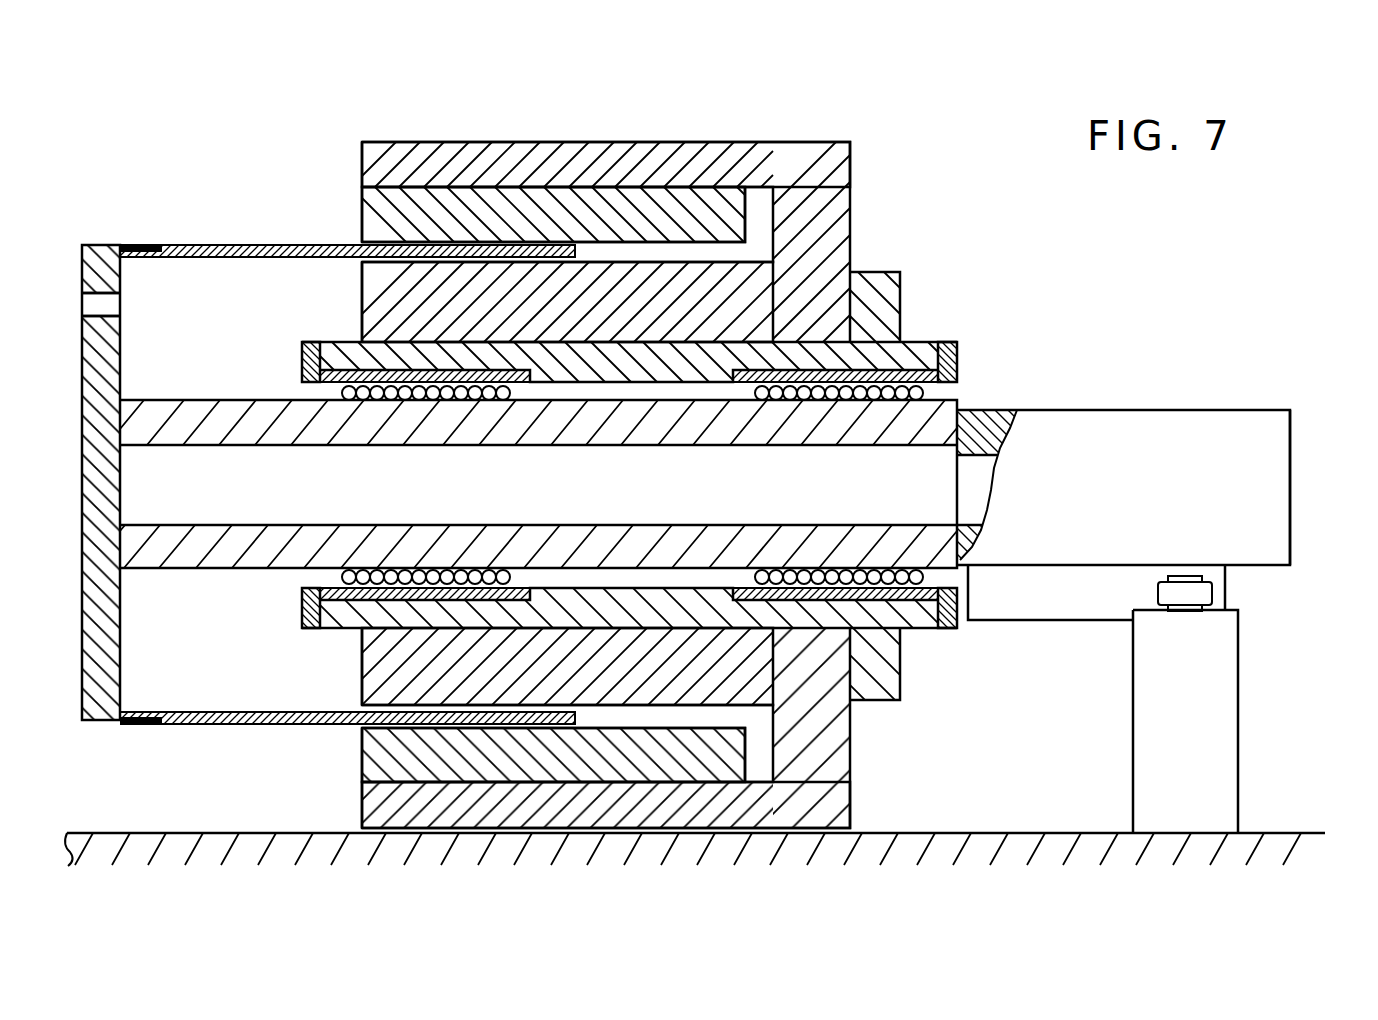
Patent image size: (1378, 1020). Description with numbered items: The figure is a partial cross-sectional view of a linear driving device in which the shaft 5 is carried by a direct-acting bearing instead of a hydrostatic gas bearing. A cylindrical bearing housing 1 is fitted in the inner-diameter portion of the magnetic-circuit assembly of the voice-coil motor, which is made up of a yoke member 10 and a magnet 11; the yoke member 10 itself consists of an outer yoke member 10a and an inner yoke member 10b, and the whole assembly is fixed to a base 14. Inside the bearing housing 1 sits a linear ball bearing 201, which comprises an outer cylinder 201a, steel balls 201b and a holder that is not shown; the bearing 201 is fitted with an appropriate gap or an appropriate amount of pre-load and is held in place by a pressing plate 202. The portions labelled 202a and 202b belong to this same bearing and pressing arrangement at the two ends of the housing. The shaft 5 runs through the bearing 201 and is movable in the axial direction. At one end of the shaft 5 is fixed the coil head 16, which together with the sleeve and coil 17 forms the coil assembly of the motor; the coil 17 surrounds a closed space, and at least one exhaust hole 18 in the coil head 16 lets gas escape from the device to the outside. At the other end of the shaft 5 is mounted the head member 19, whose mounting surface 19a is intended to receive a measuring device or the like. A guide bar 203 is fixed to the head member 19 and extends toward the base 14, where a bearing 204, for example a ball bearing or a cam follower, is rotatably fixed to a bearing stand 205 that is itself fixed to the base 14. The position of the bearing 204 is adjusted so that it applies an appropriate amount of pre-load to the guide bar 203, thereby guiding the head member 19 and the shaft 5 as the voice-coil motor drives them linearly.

The bearing housing 1 is at (893, 297).
The shaft 5 is at (598, 532).
The yoke member 10 is at (835, 152).
The outer yoke member 10a is at (604, 160).
The inner yoke member 10b is at (360, 303).
The magnet 11 is at (365, 202).
The base 14 is at (263, 845).
The coil head 16 is at (112, 495).
The coil 17 is at (178, 243).
The exhaust hole 18 is at (116, 305).
The head member 19 is at (1156, 450).
The mounting surface 19a is at (1294, 412).
The linear ball bearing 201 is at (657, 477).
The outer cylinder 201a is at (937, 378).
The steel balls 201b is at (337, 575).
The pressing plate 202 is at (302, 365).
The bearing race (lower) 202a is at (302, 590).
The bearing balls (upper) 202b is at (935, 393).
The guide bar 203 is at (1063, 618).
The bearing 204 is at (1212, 600).
The bearing stand 205 is at (1238, 720).